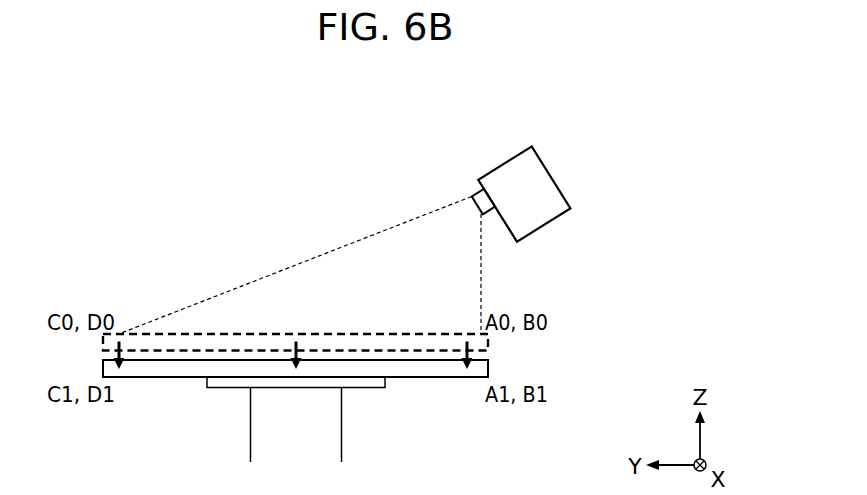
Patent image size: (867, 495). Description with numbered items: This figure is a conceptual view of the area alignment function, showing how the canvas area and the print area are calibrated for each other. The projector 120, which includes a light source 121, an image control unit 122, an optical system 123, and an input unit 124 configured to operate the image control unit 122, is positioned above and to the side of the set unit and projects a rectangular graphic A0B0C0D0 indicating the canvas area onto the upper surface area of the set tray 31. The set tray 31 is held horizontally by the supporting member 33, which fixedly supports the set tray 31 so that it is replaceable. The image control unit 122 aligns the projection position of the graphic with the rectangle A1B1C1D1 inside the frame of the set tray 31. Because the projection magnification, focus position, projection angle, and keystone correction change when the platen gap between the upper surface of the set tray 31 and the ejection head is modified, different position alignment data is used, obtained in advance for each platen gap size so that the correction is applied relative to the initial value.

The projector 120 is at (404, 92).
The light source 121 is at (508, 173).
The image control unit 122 is at (518, 197).
The optical system 123 is at (518, 197).
The input unit 124 is at (518, 197).
The set tray 31 is at (111, 368).
The supporting member 33 is at (200, 416).